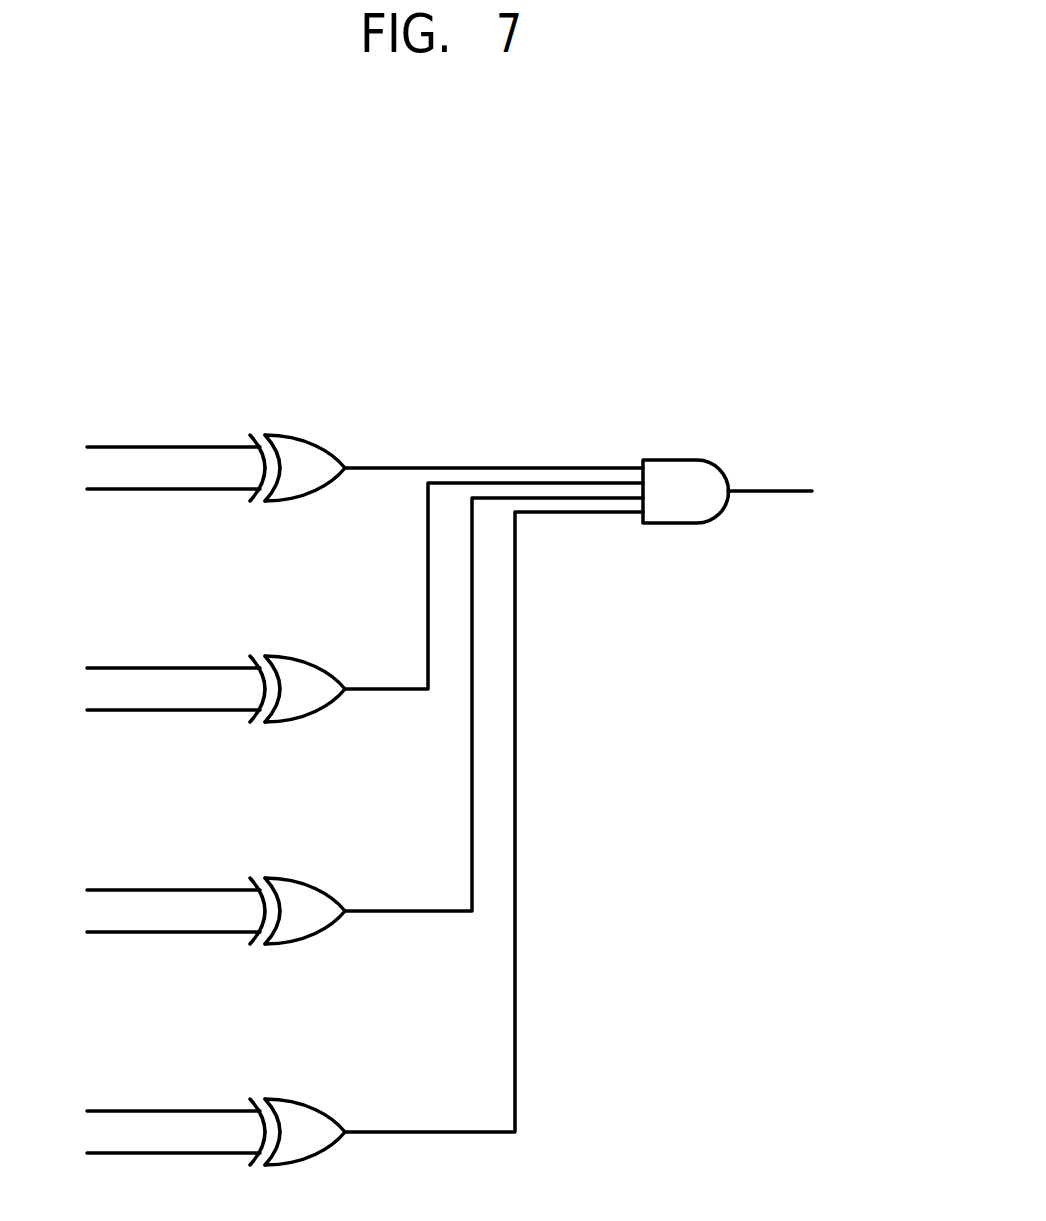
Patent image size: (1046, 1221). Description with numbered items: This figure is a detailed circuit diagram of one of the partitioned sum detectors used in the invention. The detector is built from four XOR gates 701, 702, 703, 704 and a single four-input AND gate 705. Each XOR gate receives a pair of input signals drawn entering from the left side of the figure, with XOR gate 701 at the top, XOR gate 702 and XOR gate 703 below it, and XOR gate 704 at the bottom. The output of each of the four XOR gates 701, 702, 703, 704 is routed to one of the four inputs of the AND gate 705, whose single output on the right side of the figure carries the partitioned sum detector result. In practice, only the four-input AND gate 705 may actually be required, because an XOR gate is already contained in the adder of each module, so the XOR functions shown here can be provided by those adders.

The XOR gate 701 is at (284, 437).
The XOR gate 702 is at (284, 658).
The XOR gate 703 is at (284, 880).
The XOR gate 704 is at (284, 1101).
The 4-input AND gate 705 is at (667, 460).